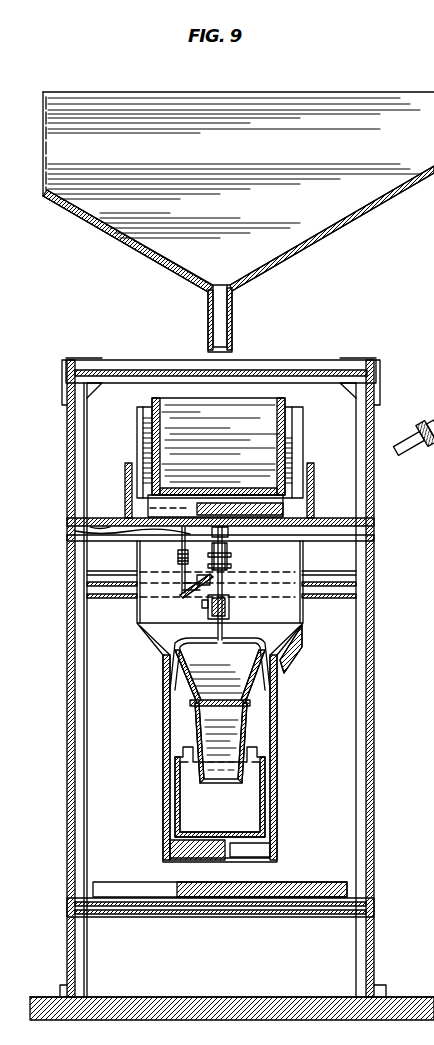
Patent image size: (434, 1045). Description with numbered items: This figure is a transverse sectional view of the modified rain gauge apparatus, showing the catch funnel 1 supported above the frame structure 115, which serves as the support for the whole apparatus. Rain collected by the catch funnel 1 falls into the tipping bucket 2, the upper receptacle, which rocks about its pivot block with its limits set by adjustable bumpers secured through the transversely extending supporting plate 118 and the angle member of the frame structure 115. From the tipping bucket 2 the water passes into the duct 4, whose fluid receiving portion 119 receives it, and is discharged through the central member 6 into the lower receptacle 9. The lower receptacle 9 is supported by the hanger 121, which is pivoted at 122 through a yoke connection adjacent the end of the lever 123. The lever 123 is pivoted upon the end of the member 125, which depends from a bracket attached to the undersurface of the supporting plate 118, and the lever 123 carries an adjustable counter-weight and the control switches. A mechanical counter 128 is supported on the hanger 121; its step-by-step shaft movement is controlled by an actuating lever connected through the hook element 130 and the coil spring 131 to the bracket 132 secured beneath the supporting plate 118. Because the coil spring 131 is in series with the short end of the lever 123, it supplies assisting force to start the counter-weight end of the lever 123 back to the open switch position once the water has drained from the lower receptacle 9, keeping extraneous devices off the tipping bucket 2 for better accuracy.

The catch funnel 1 is at (347, 210).
The tipping bucket 2 is at (248, 417).
The duct 4 is at (280, 638).
The central member 6 is at (235, 740).
The lower receptacle 9 is at (250, 803).
The frame structure 115 is at (75, 795).
The transversely extending supporting plate 118 is at (327, 517).
The fluid receiving portion 119 is at (303, 432).
The hanger 121 is at (300, 578).
The pivot 122 is at (230, 560).
The lever 123 is at (363, 538).
The member 125 is at (313, 497).
The mechanical counter 128 is at (78, 578).
The hook element 130 is at (187, 583).
The coil spring 131 is at (140, 559).
The bracket 132 is at (110, 525).